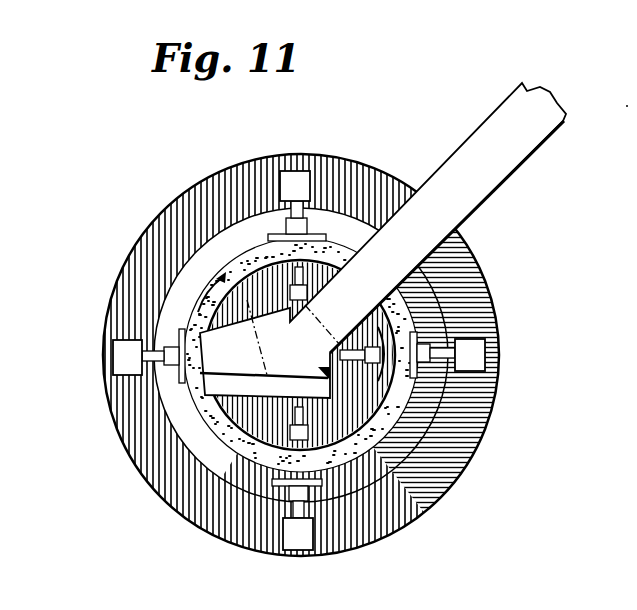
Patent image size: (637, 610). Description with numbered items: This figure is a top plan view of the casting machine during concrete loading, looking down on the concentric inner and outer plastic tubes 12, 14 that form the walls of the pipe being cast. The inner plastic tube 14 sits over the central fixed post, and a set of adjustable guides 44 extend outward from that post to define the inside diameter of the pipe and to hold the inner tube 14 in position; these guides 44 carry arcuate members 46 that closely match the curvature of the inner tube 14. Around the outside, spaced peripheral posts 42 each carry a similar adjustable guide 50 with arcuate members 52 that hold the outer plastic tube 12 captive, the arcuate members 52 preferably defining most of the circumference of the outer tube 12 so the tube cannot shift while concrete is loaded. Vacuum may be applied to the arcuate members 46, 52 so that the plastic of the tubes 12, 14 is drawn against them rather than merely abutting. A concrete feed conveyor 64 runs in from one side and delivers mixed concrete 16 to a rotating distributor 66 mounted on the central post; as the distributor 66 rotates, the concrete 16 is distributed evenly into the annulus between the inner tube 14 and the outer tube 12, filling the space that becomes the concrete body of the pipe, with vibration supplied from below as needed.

The outer plastic tube 12 is at (387, 467).
The inner plastic tube 14 is at (257, 407).
The mixed concrete 16 is at (245, 426).
The peripheral posts 42 is at (297, 183).
The adjustable guides 44 is at (467, 437).
The arcuate members 46 is at (247, 300).
The adjustable guide 50 is at (163, 330).
The arcuate members 52 is at (324, 355).
The concrete feed conveyor 64 is at (467, 188).
The rotating distributor 66 is at (222, 368).